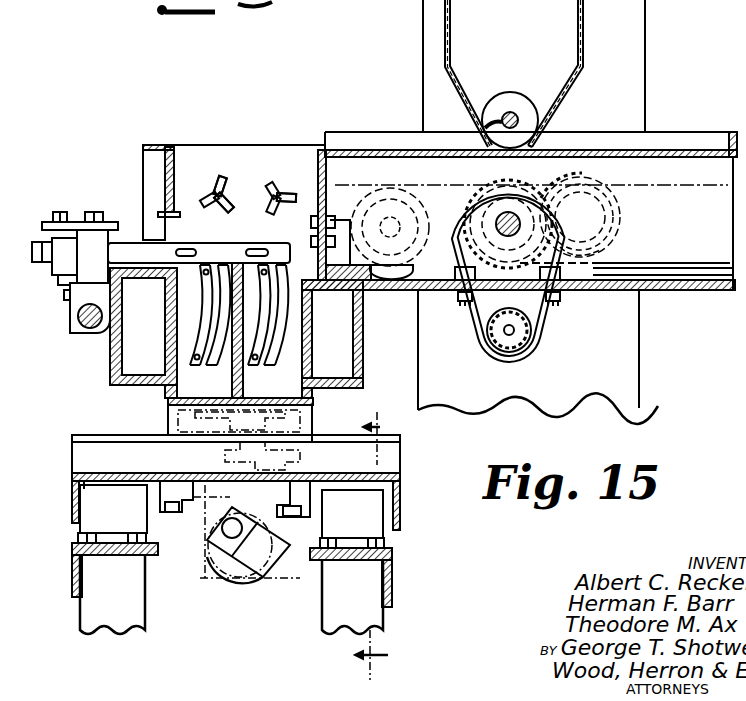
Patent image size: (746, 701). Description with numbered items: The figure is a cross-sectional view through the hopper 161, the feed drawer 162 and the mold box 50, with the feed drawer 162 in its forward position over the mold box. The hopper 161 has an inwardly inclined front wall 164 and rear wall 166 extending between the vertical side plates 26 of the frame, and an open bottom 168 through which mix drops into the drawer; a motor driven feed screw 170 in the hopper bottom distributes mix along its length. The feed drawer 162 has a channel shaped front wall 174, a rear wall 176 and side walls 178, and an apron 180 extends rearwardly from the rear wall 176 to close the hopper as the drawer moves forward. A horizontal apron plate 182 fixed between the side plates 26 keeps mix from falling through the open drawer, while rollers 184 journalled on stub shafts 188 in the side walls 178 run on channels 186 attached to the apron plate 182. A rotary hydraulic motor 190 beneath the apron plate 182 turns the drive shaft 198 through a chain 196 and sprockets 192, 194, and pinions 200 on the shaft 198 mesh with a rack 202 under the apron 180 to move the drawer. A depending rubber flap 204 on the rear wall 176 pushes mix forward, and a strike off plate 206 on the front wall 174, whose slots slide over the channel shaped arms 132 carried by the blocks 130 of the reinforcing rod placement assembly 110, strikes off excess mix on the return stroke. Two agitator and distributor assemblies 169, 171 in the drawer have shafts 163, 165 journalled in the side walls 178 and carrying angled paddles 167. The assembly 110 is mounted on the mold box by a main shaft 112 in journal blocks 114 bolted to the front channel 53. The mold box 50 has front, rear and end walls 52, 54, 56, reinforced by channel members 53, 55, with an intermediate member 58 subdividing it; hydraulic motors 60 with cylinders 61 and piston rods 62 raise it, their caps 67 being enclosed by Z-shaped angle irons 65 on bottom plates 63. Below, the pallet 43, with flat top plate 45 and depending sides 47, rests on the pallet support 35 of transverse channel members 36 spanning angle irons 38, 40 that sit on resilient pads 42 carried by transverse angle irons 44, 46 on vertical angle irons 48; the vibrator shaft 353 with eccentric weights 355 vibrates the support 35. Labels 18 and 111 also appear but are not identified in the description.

The section line 18- 18 is at (382, 544).
The vertical side plates 26 is at (647, 25).
The pallet support 35 is at (409, 453).
The transverse channel members 36 is at (72, 450).
The front angle iron 38 is at (72, 513).
The rear angle iron 40 is at (400, 509).
The resilient pads 42 is at (112, 518).
The pallet 43 is at (312, 411).
The front transverse angle iron 44 is at (72, 579).
The flat top plate 45 is at (175, 398).
The rear transverse angle iron 46 is at (392, 573).
The depending sides 47 is at (165, 425).
The vertical angle irons 48 is at (231, 594).
The mold box 50 is at (313, 334).
The front wall 52 is at (165, 305).
The channel member 53 is at (118, 331).
The rear wall 54 is at (305, 363).
The channel member 55 is at (364, 351).
The end walls 56 is at (298, 293).
The intermediate member 58 is at (241, 263).
The hydraulic motors 60 is at (238, 580).
The cylinders 61 is at (207, 578).
The piston rods 62 is at (262, 453).
The bottom plate 63 is at (312, 429).
The Z-shaped angle irons 65 is at (176, 451).
The cap 67 is at (212, 453).
The reinforcing rod placement assembly 110 is at (126, 214).
The curved guide arms 111 is at (194, 366).
The main shaft 112 is at (79, 318).
The journal blocks 114 is at (70, 340).
The blocks 130 is at (210, 250).
The channel shaped arm 132 is at (285, 252).
The hopper 161 is at (587, 43).
The feed drawer 162 is at (313, 131).
The shaft 163 is at (212, 190).
The front wall 164 is at (452, 70).
The shaft 165 is at (281, 190).
The rear wall 166 is at (571, 93).
The paddles 167 is at (224, 190).
The open bottom 168 is at (536, 147).
The combination agitator and distributor assembly 169 is at (220, 165).
The feed screw 170 is at (518, 103).
The combination agitator and distributor assembly 171 is at (282, 185).
The front wall 174 is at (176, 148).
The rear wall 176 is at (333, 169).
The side walls 178 is at (233, 148).
The apron 180 is at (672, 150).
The horizontal apron plate 182 is at (705, 292).
The rollers 184 is at (607, 214).
The channels 186 is at (690, 265).
The stub shafts 188 is at (592, 240).
The rotary hydraulic motor 190 is at (538, 343).
The sprocket 192 is at (541, 320).
The sprocket 194 is at (481, 303).
The chain 196 is at (512, 356).
The feed drawer drive shaft 198 is at (485, 236).
The pinions 200 is at (550, 188).
The rack 202 is at (487, 183).
The rubber flap 204 is at (357, 259).
The strike off plate 206 is at (166, 249).
The shaft 353 is at (238, 518).
The eccentric weights 355 is at (262, 578).